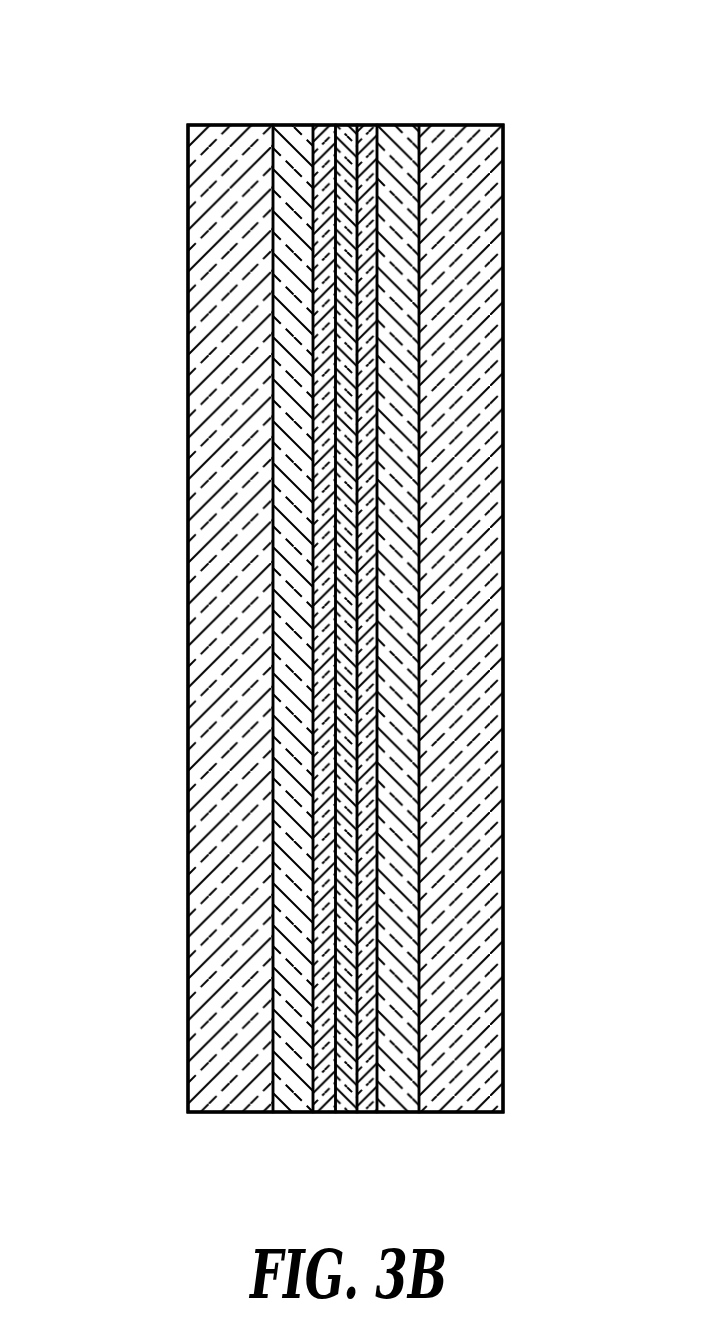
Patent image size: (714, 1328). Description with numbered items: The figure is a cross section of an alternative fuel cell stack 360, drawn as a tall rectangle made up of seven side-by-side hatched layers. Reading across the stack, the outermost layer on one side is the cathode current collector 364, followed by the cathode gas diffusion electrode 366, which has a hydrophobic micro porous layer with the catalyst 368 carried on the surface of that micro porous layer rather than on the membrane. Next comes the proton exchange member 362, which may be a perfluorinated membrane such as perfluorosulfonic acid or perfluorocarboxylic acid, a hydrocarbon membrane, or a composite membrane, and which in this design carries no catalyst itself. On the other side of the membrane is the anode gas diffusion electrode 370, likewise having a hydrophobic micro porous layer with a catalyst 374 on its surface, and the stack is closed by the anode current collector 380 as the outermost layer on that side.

The alternative fuel cell stack 360 is at (147, 43).
The proton exchange member 362 is at (347, 128).
The cathode current collector 364 is at (218, 337).
The cathode gas diffusion electrode 366 is at (297, 755).
The catalyst 368 is at (318, 932).
The anode gas diffusion electrode 370 is at (397, 1097).
The catalyst 374 is at (369, 133).
The anode current collector 380 is at (482, 817).